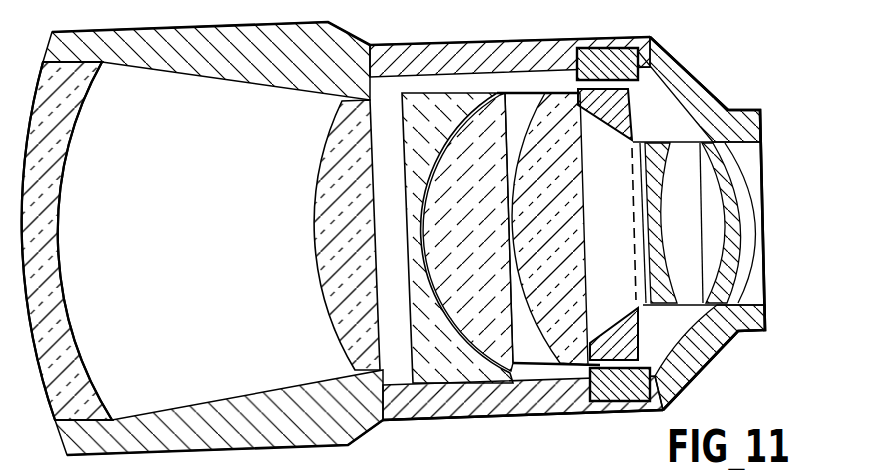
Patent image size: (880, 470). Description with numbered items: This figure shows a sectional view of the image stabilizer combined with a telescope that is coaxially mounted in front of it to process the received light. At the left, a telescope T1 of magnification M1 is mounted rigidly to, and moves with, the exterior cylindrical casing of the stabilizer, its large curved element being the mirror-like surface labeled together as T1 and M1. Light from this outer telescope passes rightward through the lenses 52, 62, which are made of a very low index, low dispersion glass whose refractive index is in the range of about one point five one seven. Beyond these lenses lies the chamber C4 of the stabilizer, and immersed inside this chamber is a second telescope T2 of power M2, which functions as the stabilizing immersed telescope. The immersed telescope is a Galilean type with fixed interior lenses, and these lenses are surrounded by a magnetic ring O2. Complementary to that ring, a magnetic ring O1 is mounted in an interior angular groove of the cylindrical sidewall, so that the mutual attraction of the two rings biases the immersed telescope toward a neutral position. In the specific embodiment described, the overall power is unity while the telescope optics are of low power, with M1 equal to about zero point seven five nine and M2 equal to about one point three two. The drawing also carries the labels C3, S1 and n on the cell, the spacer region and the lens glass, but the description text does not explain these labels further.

The telescope T1 is at (172, 303).
The magnification of telescope T1 M1 is at (67, 241).
The chamber C4 is at (497, 68).
The mirror cell C3 is at (430, 423).
The spacer S1 is at (465, 421).
The lens 52 is at (449, 116).
The lens 62 is at (481, 207).
The refractive index medium n is at (492, 330).
The magnetic ring O1 is at (598, 63).
The magnetic ring O2 is at (632, 118).
The telescope T2 is at (598, 140).
The power of telescope T2 M2 is at (632, 283).